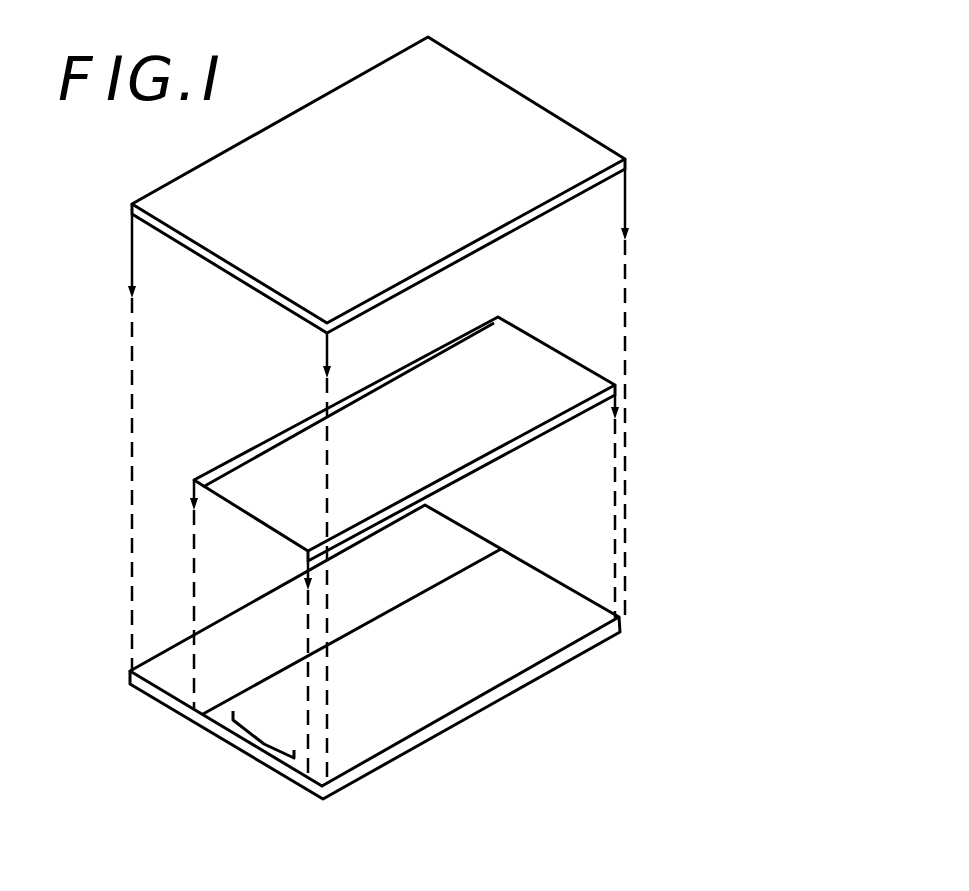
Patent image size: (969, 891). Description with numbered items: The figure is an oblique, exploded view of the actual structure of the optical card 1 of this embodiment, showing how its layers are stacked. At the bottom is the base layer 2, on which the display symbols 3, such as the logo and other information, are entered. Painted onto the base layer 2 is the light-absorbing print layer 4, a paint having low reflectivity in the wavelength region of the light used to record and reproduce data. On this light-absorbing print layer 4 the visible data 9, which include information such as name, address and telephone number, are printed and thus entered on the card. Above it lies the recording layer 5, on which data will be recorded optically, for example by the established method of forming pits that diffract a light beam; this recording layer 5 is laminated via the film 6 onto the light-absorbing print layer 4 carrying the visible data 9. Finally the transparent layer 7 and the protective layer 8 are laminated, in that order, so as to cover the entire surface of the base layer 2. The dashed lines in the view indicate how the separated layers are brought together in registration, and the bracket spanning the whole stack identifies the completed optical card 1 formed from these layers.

The optical card 1 is at (379, 403).
The base layer 2 is at (340, 647).
The display symbols 3 is at (172, 684).
The light-absorbing print layer 4 is at (520, 583).
The recording layer 5 is at (404, 397).
The film 6 is at (495, 314).
The transparent layer 7 is at (390, 166).
The protective layer 8 is at (540, 118).
The visible data 9 is at (262, 743).